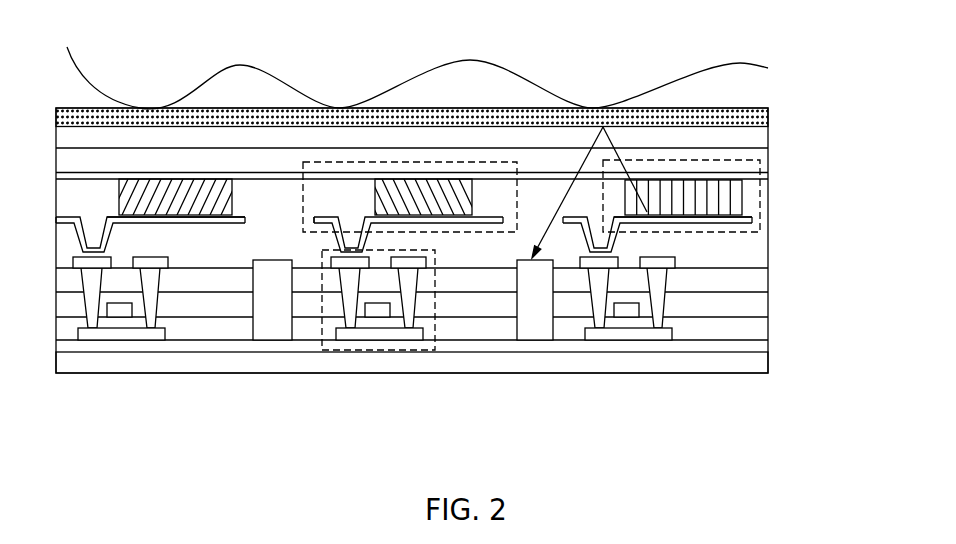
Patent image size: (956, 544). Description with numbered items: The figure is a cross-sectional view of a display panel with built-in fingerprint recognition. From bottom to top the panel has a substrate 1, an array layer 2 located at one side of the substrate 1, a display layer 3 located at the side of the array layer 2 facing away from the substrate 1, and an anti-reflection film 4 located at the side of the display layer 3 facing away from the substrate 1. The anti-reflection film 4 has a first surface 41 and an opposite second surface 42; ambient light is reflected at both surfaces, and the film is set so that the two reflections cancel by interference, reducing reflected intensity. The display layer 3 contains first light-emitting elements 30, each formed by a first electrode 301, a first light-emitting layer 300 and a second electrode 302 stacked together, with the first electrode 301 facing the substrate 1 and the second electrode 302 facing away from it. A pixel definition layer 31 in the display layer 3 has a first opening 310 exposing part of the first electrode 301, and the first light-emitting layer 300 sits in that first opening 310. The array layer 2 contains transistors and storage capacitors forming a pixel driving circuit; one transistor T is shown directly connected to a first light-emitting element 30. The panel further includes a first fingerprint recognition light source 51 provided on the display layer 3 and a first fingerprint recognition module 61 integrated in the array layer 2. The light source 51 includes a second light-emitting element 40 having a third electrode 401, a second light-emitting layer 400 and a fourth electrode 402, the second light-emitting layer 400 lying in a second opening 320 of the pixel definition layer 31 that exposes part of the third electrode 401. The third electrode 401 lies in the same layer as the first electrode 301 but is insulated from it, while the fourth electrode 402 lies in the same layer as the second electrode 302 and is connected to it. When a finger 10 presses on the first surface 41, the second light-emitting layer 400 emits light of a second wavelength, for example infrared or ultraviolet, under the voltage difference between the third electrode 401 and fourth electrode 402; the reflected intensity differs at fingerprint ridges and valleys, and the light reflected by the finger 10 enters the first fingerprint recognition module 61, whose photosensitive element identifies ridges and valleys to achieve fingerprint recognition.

The substrate 1 is at (750, 367).
The array layer 2 is at (773, 225).
The display layer 3 is at (773, 178).
The anti-reflection film 4 is at (435, 166).
The first surface 41 is at (745, 107).
The second surface 42 is at (738, 127).
The finger 10 is at (757, 68).
The first light-emitting element 30 is at (312, 223).
The pixel definition layer 31 is at (278, 198).
The first light-emitting layer 300 is at (157, 296).
The first opening 310 is at (127, 203).
The first electrode 301 is at (188, 218).
The second electrode 302 is at (224, 176).
The second light-emitting layer 400 is at (530, 313).
The second opening 320 is at (418, 197).
The third electrode 401 is at (718, 217).
The fourth electrode 402 is at (707, 177).
The second light-emitting element 40 is at (737, 233).
The first fingerprint recognition light source 51 is at (710, 290).
The first fingerprint recognition module 61 is at (258, 330).
The transistor T is at (378, 350).